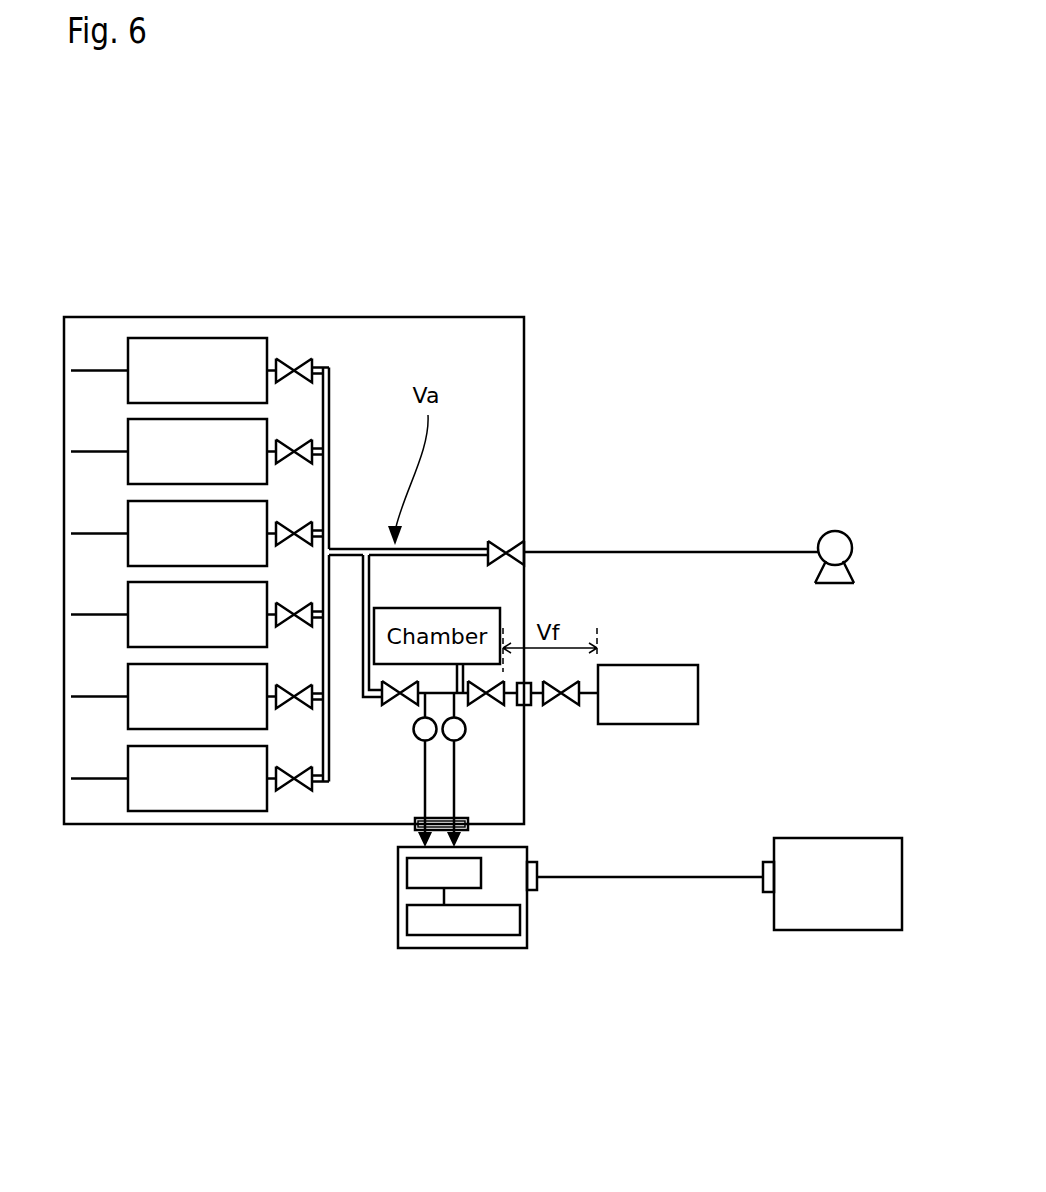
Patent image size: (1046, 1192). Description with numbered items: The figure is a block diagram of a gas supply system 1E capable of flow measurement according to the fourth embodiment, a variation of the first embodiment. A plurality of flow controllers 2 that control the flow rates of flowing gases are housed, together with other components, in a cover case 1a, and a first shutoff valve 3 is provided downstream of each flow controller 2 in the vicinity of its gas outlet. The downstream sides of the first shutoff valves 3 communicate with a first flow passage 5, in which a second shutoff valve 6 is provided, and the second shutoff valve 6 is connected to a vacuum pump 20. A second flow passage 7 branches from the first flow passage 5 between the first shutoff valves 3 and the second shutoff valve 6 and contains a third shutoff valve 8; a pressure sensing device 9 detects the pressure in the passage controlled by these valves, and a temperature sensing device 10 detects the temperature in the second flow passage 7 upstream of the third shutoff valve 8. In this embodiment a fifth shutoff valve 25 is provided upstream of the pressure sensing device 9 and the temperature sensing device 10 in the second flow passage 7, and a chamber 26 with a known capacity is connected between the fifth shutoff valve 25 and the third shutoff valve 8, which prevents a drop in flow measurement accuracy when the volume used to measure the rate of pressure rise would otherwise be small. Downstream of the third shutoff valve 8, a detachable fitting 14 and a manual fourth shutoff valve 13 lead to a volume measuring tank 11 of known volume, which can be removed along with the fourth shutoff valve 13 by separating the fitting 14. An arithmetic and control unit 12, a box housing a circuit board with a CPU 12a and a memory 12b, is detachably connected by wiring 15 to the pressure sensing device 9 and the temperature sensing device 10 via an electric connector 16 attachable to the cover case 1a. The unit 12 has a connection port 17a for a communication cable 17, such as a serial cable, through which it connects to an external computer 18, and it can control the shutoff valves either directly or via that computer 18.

The gas supply system 1E is at (628, 235).
The cover case 1a is at (524, 366).
The flow controller 2 is at (160, 338).
The first shutoff valve 3 is at (290, 358).
The first flow passage 5 is at (448, 548).
The second shutoff valve 6 is at (498, 562).
The second flow passage 7 is at (372, 562).
The third shutoff valve 8 is at (483, 705).
The pressure sensing device 9 is at (466, 733).
The temperature sensing device 10 is at (417, 742).
The volume measuring tank 11 is at (645, 724).
The arithmetic and control unit 12 is at (443, 958).
The CPU 12a is at (407, 886).
The memory 12b is at (520, 920).
The fourth shutoff valve 13 is at (575, 705).
The detachable fitting 14 is at (531, 705).
The wiring 15 is at (425, 783).
The electric connector 16 is at (415, 822).
The communication cable 17 is at (645, 880).
The connection port 17a is at (537, 888).
The external computer 18 is at (825, 932).
The vacuum pump 20 is at (835, 530).
The fifth shutoff valve 25 is at (392, 702).
The chamber 26 is at (448, 607).